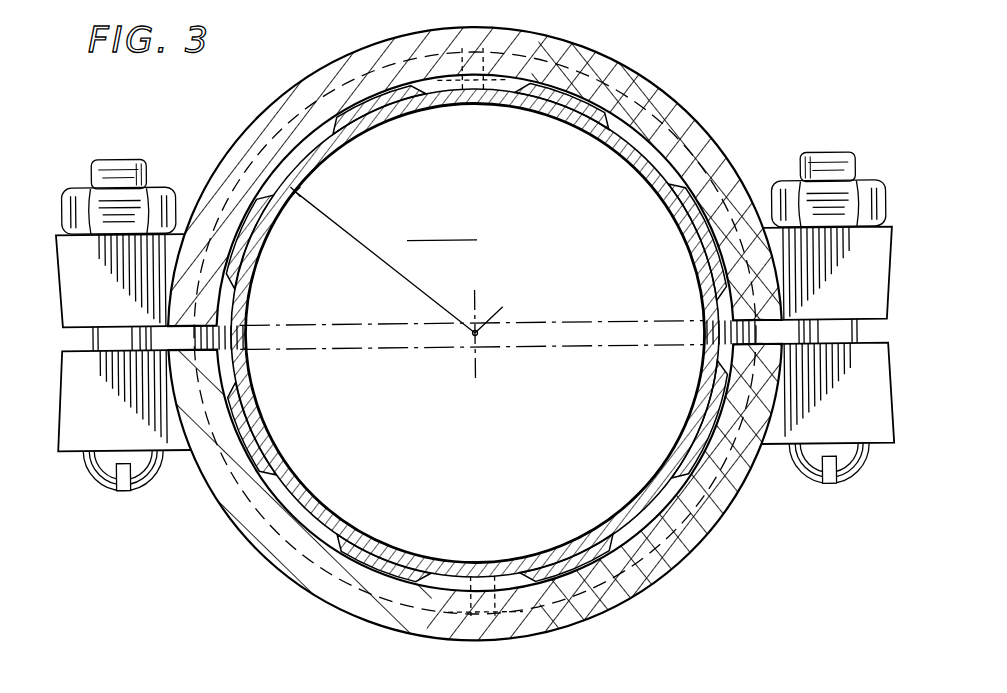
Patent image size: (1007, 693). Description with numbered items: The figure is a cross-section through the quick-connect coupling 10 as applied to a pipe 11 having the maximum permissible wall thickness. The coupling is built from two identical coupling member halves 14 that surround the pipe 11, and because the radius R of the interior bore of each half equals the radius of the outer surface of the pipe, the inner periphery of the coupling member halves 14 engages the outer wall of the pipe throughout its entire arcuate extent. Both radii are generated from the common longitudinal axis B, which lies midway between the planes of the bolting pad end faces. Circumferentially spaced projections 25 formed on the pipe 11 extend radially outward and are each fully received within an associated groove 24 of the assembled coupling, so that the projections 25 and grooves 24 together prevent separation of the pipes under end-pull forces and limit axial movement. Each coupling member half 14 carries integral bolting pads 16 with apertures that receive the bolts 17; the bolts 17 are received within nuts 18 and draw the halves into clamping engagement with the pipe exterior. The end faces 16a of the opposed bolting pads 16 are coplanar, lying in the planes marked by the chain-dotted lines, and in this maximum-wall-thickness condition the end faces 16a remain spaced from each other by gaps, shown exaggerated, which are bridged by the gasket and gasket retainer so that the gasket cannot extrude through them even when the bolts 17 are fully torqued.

The quick-connect coupling 10 is at (258, 98).
The pipe 11 is at (475, 100).
The coupling member half 14 is at (372, 45).
The bolting pad 16 is at (70, 293).
The end face 16a is at (76, 340).
The bolt 17 is at (108, 158).
The nut 18 is at (172, 203).
The groove 24 is at (653, 157).
The projection 25 is at (538, 108).